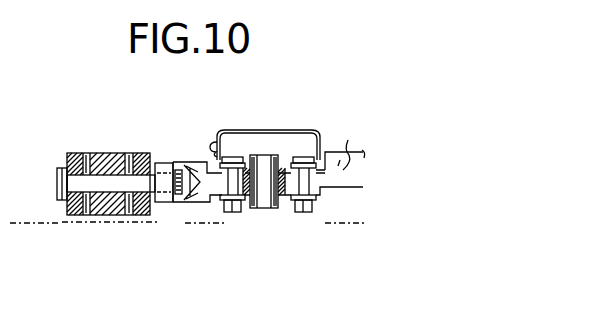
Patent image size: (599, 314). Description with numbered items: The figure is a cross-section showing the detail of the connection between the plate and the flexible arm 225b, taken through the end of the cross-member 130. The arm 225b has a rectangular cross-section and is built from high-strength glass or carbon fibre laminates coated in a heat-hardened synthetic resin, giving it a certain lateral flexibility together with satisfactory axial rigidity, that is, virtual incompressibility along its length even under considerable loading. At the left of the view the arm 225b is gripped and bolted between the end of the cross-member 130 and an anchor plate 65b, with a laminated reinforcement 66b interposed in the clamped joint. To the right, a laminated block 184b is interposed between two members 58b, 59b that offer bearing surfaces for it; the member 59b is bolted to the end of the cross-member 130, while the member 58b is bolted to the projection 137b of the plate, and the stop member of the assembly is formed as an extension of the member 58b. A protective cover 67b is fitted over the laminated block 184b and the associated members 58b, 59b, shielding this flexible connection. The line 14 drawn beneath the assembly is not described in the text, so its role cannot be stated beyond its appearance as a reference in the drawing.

The ground line 14 is at (33, 227).
The member 58b is at (296, 210).
The member 59b is at (247, 208).
The anchor plate 65b is at (78, 153).
The laminated reinforcement 66b is at (132, 215).
The protective cover 67b is at (238, 128).
The cross-member 130 is at (196, 160).
The projection 137b is at (341, 142).
The laminated block 184b is at (266, 210).
The flexible arm 225b is at (108, 153).